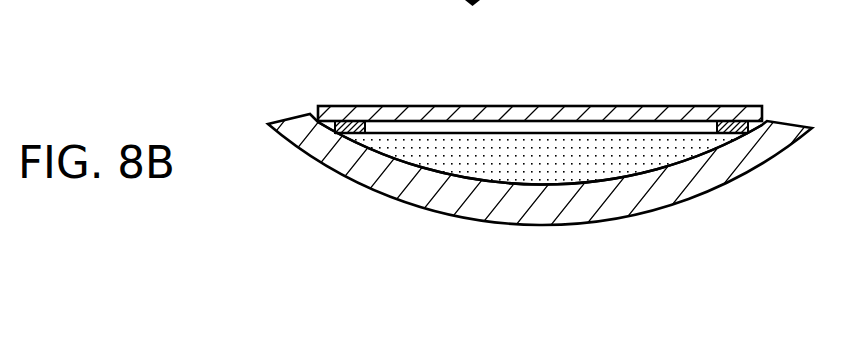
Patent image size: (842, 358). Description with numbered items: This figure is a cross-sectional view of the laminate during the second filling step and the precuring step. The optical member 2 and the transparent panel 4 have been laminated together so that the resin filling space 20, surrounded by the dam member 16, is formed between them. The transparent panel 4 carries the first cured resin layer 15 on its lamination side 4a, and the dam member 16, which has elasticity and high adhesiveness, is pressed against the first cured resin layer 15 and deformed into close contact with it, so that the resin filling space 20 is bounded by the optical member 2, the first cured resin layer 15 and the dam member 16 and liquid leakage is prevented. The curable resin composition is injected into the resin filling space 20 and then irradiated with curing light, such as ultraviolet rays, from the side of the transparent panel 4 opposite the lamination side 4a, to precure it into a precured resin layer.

The optical member 2 is at (668, 105).
The transparent panel 4 is at (633, 216).
The lamination side 4a is at (566, 183).
The first cured resin layer 15 is at (472, 160).
The dam member 16 is at (347, 127).
The resin filling space 20 is at (553, 128).